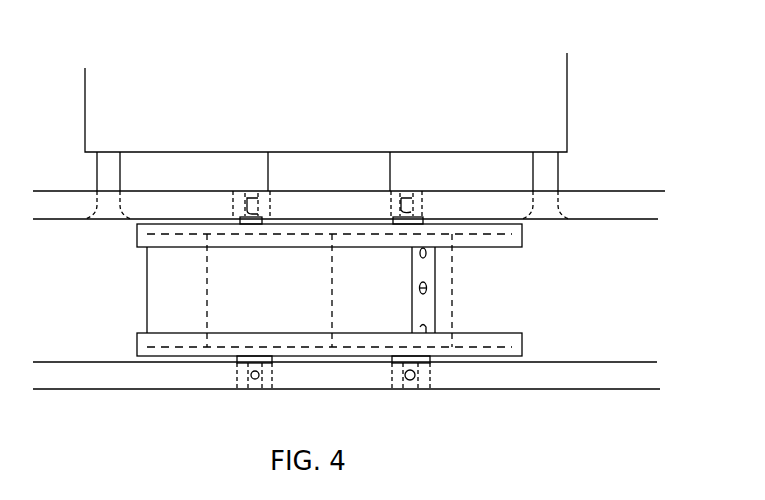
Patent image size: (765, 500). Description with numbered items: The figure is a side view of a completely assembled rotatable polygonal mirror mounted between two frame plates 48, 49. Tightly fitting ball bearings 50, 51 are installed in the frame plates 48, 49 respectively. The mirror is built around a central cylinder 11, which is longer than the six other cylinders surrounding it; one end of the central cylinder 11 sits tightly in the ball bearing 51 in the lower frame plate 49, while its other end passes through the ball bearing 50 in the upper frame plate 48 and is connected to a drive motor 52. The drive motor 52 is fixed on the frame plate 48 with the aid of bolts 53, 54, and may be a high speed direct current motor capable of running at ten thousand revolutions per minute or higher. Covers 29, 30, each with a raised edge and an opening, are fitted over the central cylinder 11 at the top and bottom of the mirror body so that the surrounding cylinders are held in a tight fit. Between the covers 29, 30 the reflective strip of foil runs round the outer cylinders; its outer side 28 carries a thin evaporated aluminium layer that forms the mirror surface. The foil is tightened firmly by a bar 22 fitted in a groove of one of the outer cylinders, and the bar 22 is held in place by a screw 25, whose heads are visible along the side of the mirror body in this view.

The drive motor 52 is at (427, 93).
The bolt 53 is at (100, 166).
The bolt 54 is at (558, 163).
The frame plate 48 is at (617, 197).
The ball bearing 50 is at (237, 193).
The central cylinder 11 is at (380, 170).
The cover 29 is at (522, 226).
The cover 30 is at (522, 338).
The outer side 28 is at (147, 291).
The bar 22 is at (428, 305).
The screw 25 is at (423, 283).
The frame plate 49 is at (598, 367).
The ball bearing 51 is at (240, 390).